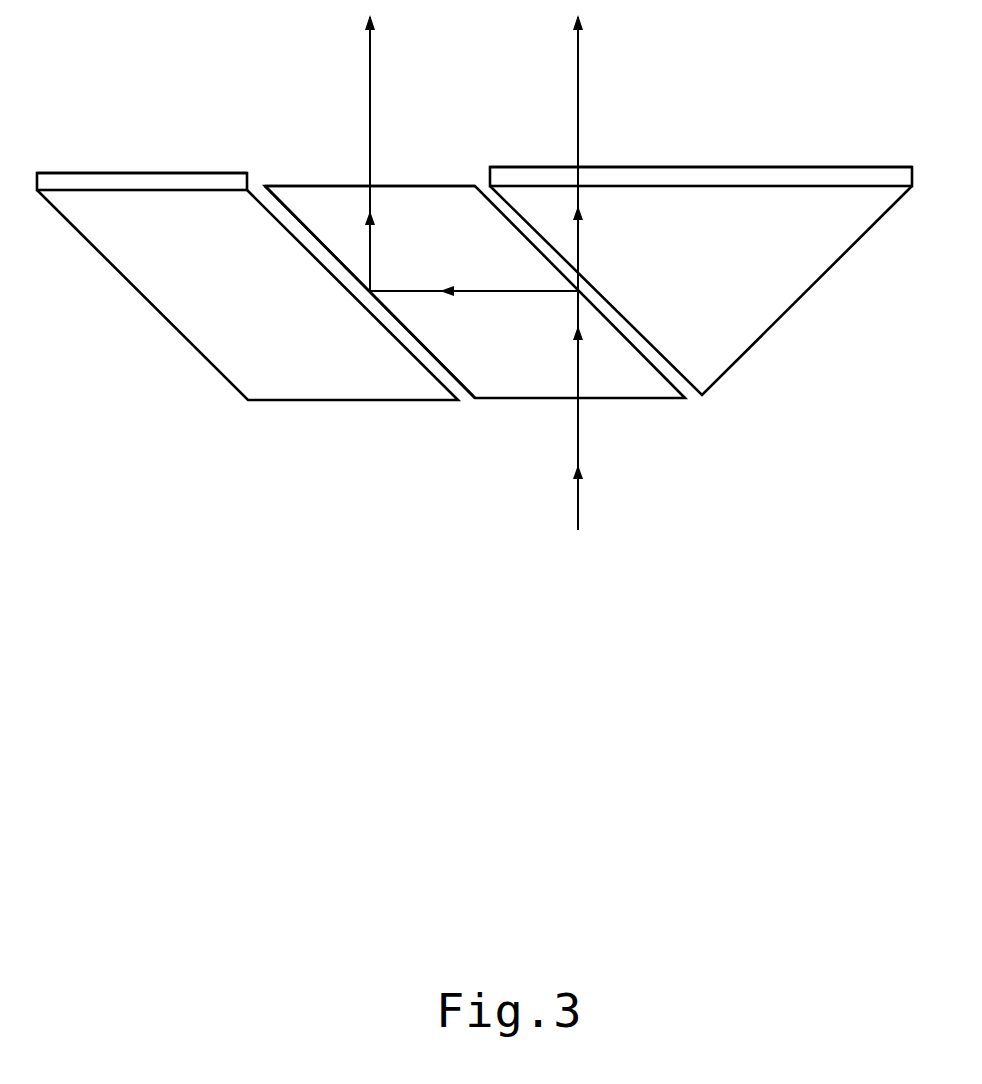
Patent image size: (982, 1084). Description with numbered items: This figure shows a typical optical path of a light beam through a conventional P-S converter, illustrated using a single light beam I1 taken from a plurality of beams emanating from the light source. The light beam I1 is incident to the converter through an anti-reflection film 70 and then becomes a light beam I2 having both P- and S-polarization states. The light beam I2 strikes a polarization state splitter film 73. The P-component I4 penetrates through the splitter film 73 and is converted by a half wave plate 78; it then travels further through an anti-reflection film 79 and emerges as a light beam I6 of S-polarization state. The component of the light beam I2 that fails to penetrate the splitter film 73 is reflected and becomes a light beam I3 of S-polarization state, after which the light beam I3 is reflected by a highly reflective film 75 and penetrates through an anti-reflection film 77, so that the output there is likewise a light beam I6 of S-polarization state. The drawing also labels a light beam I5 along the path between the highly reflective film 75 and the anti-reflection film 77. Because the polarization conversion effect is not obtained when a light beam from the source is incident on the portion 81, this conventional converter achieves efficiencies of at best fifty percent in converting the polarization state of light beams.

The anti-reflection film 70 is at (523, 405).
The polarization state splitter film 73 is at (482, 183).
The highly reflective film 75 is at (320, 255).
The anti-reflection film 77 is at (290, 178).
The half wave plate 78 is at (178, 180).
The anti-reflection film 79 is at (75, 167).
The portion 81 is at (302, 403).
The light beam I1 is at (598, 464).
The light beam I2 is at (562, 344).
The light beam I3 is at (474, 275).
The P-component I4 is at (597, 238).
The light beam I5 is at (354, 238).
The light beam I6 is at (492, 100).